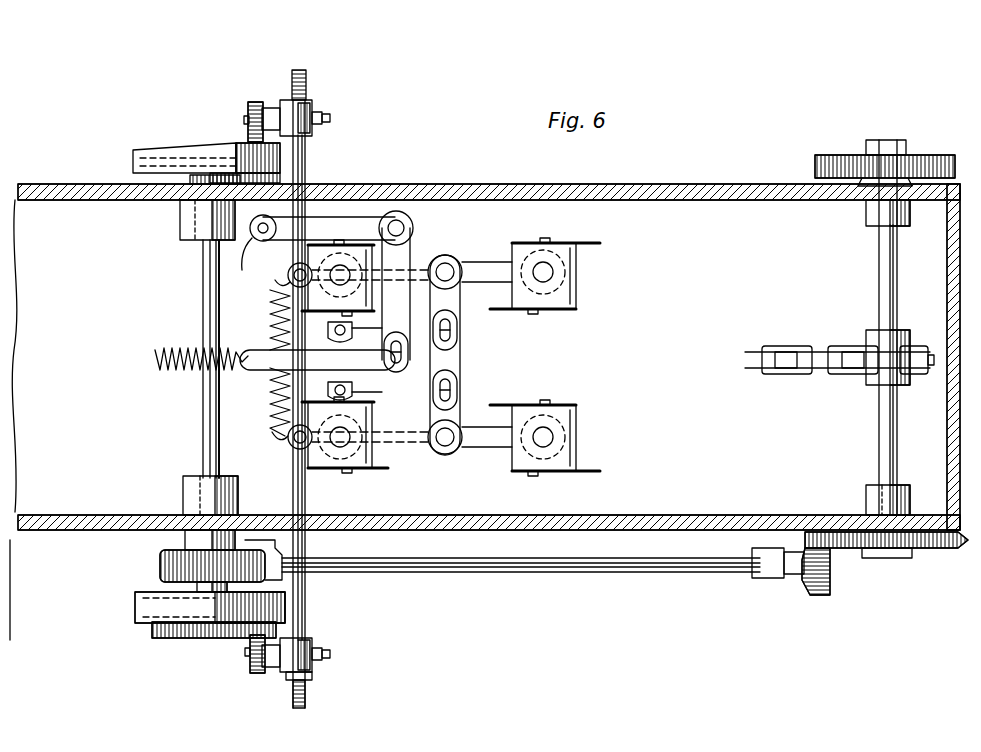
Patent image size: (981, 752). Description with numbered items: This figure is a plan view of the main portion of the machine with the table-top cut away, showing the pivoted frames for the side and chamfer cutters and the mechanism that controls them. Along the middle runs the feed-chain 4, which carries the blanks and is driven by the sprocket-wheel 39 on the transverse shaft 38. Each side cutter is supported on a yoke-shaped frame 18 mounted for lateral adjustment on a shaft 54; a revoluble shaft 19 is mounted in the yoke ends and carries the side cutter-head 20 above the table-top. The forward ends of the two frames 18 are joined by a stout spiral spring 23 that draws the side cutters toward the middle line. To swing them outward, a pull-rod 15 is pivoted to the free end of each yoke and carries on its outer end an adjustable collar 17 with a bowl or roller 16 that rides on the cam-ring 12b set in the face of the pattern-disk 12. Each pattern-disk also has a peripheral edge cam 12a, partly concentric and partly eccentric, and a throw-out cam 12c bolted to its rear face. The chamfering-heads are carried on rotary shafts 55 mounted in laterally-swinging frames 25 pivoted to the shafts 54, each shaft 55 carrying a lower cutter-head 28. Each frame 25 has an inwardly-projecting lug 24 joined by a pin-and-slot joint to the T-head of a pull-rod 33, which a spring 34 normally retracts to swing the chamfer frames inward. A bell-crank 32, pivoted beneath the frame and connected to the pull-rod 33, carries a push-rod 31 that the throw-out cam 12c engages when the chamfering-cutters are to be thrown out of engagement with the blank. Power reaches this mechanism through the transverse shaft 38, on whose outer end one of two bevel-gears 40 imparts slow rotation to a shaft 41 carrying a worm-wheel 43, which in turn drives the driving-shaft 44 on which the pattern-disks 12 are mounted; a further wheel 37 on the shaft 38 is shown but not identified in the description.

The feed-chain 4 is at (765, 372).
The pattern-disk 12 is at (145, 588).
The peripheral edge cam 12a is at (125, 622).
The cam-ring 12b is at (222, 648).
The throw-out cam 12c is at (158, 178).
The pull-rod 15 is at (307, 170).
The bowl or roller 16 is at (258, 100).
The collar 17 is at (312, 110).
The yoke-shaped frame 18 is at (412, 260).
The revoluble shaft 19 is at (336, 282).
The side cutter-head 20 is at (360, 300).
The spiral spring 23 is at (268, 404).
The ear or lug 24 is at (462, 310).
The laterally-swinging frame 25 is at (482, 282).
The lower cutter-head 28 is at (576, 296).
The push-rod 31 is at (241, 259).
The bell-crank 32 is at (332, 208).
The pull-rod 33 is at (320, 350).
The spring 34 is at (168, 372).
The gear 37 is at (815, 160).
The transverse shaft 38 is at (878, 282).
The sprocket-wheel 39 is at (872, 378).
The bevel-gears 40 is at (830, 570).
The shaft 41 is at (560, 572).
The worm-wheel 43 is at (160, 556).
The driving-shaft 44 is at (203, 405).
The shaft 54 is at (450, 265).
The rotary shaft 55 is at (553, 272).